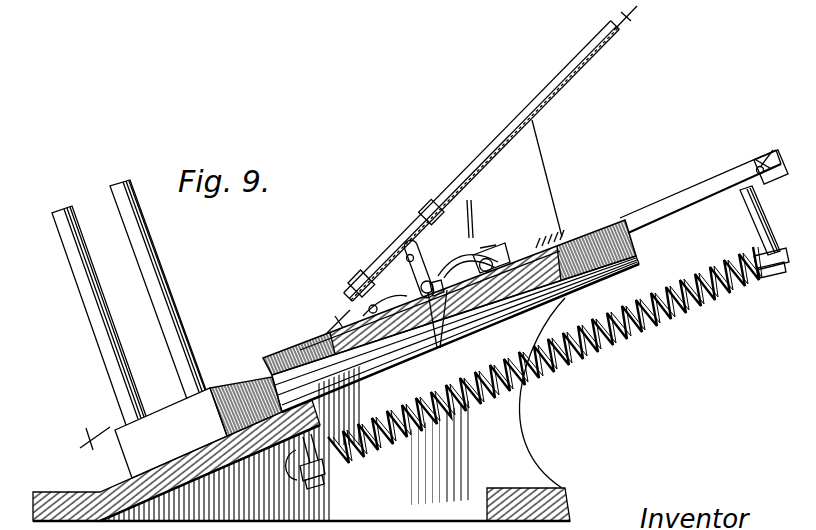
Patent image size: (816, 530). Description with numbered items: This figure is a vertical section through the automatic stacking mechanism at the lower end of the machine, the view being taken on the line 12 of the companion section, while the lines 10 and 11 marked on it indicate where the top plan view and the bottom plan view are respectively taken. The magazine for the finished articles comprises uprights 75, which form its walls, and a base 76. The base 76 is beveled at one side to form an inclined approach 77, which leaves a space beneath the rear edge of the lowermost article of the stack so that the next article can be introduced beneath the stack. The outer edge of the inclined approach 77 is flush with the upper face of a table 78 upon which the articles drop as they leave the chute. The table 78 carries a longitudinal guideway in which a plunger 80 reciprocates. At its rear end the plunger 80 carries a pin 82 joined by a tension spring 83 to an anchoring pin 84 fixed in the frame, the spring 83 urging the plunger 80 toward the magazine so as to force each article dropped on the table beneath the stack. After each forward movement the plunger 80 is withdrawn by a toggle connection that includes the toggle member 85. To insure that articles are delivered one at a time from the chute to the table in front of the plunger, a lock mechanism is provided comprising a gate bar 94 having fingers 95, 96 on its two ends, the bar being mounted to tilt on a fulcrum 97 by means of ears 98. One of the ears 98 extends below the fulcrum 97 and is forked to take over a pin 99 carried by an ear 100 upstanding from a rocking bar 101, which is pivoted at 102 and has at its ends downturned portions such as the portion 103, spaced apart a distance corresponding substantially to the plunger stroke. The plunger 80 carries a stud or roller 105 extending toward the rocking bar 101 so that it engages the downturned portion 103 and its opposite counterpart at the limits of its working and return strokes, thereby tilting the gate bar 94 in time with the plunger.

The section line 10- 10 is at (421, 298).
The section line 11- 11 is at (486, 169).
The section line 12- 12 is at (393, 243).
The uprights 75 is at (170, 318).
The base 76 is at (172, 411).
The inclined approach 77 is at (244, 380).
The table 78 is at (332, 347).
The plunger 80 is at (497, 306).
The pin 82 is at (746, 228).
The tension spring 83 is at (655, 331).
The anchoring pin 84 is at (297, 481).
The toggle member 85 is at (766, 181).
The gate bar 94 is at (430, 224).
The finger 95 is at (480, 214).
The finger 96 is at (362, 282).
The fulcrum 97 is at (479, 165).
The ears 98 is at (416, 270).
The pin 99 is at (421, 266).
The ear 100 is at (455, 258).
The rocking bar 101 is at (485, 248).
The pivot 102 is at (438, 350).
The downturned portion 103 is at (503, 252).
The stud or roller 105 is at (449, 297).